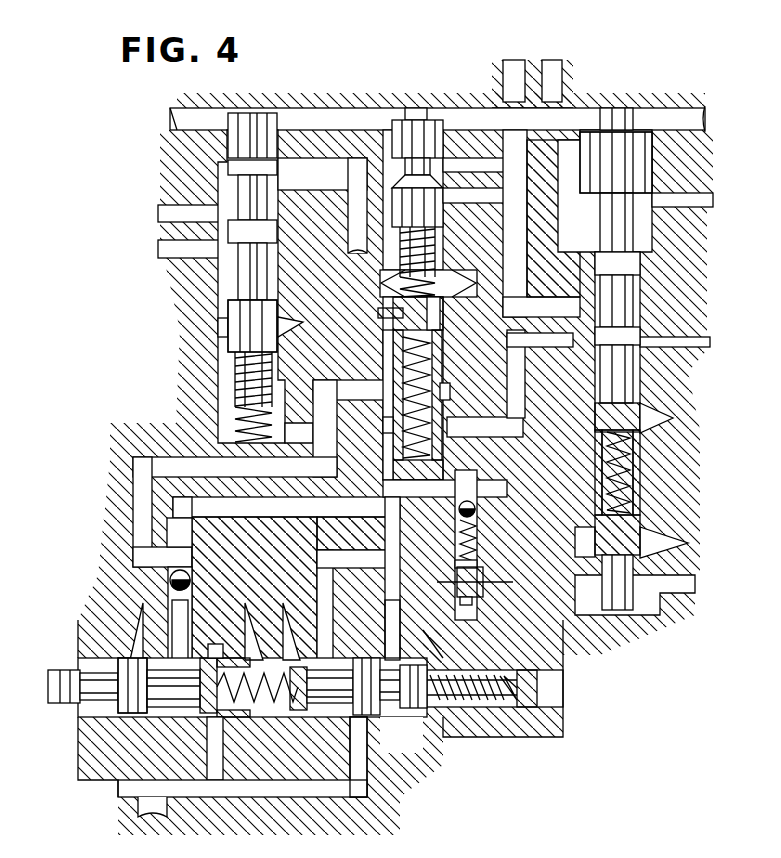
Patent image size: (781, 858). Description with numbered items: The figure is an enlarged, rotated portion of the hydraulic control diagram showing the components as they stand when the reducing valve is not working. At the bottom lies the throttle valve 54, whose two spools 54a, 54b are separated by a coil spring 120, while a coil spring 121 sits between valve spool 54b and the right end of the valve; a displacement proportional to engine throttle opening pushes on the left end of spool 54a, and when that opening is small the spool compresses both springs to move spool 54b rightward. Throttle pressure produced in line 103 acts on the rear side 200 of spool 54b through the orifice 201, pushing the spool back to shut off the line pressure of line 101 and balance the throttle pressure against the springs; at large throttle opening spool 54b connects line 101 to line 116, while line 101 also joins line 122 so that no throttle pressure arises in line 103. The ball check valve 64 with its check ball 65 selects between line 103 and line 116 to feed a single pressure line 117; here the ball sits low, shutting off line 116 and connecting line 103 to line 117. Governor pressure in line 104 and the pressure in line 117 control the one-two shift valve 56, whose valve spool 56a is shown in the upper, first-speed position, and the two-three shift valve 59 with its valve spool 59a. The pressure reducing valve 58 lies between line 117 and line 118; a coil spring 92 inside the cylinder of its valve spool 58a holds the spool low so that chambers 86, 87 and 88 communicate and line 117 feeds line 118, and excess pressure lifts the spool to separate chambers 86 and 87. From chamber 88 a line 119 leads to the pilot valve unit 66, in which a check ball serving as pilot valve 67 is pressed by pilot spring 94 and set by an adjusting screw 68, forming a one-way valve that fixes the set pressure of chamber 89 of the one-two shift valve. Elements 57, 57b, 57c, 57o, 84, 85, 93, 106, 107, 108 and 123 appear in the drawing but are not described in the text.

The throttle valve 54 is at (47, 686).
The valve spool 54a is at (95, 663).
The valve spool 54b is at (300, 650).
The one-two shift valve 56 is at (615, 110).
The valve spool 56a is at (630, 166).
The regulator valve 57 is at (420, 112).
The passage 57b is at (497, 182).
The passage 57c is at (395, 228).
The passage 57o is at (480, 150).
The pressure reducing valve 58 is at (447, 356).
The valve spool 58a is at (391, 318).
The two-three shift valve 59 is at (254, 110).
The valve spool 59a is at (237, 340).
The ball check valve 64 is at (203, 533).
The check ball 65 is at (190, 578).
The pilot valve unit 66 is at (460, 546).
The pilot valve 67 is at (476, 509).
The adjusting screw 68 is at (484, 592).
The spring 84 is at (215, 645).
The passage 85 is at (178, 615).
The chamber 86 is at (387, 389).
The chamber 87 is at (383, 425).
The chamber 88 is at (385, 468).
The chamber 89 is at (652, 460).
The coil spring 92 is at (446, 373).
The spring chamber 93 is at (640, 480).
The pilot spring 94 is at (478, 563).
The line 101 is at (290, 783).
The line 103 is at (308, 506).
The line 104 is at (673, 120).
The passage 106 is at (190, 250).
The passage 107 is at (522, 292).
The passage 108 is at (192, 212).
The line 116 is at (172, 600).
The pressure line 117 is at (160, 460).
The line 118 is at (507, 425).
The line 119 is at (465, 472).
The coil spring 120 is at (262, 720).
The coil spring 121 is at (500, 703).
The line 122 is at (333, 599).
The passage 123 is at (393, 718).
The rear side 200 is at (382, 712).
The orifice 201 is at (382, 625).